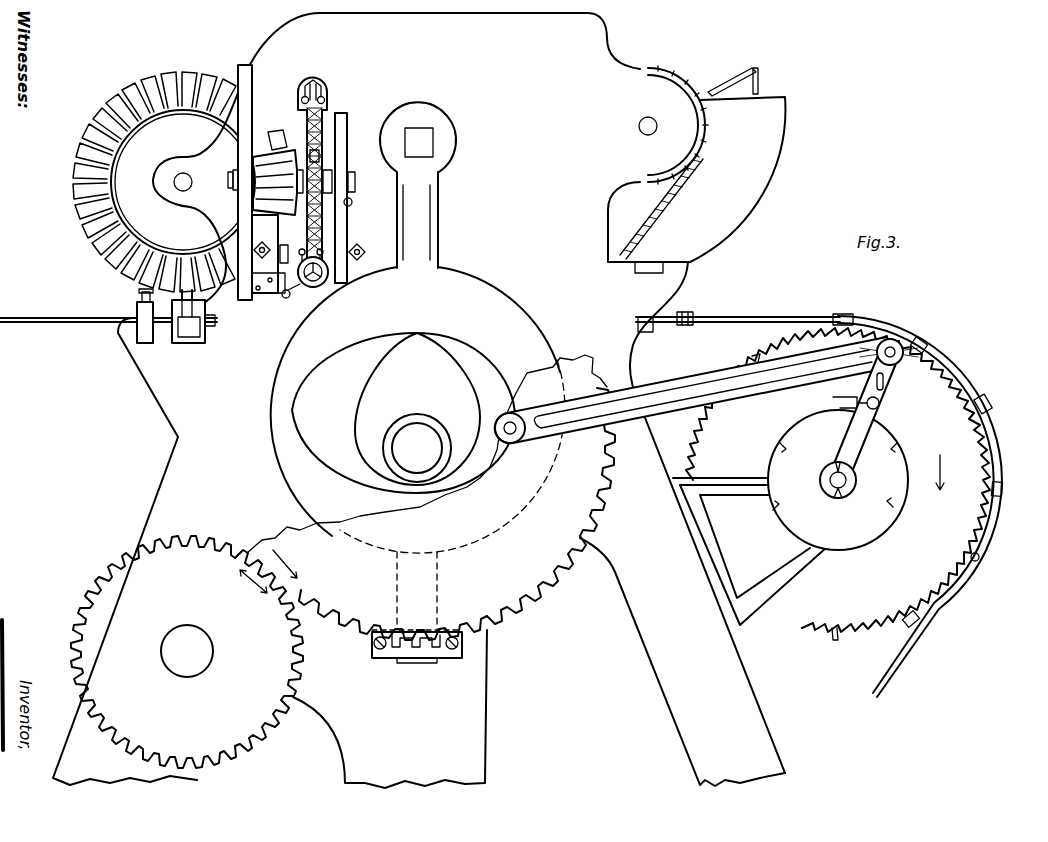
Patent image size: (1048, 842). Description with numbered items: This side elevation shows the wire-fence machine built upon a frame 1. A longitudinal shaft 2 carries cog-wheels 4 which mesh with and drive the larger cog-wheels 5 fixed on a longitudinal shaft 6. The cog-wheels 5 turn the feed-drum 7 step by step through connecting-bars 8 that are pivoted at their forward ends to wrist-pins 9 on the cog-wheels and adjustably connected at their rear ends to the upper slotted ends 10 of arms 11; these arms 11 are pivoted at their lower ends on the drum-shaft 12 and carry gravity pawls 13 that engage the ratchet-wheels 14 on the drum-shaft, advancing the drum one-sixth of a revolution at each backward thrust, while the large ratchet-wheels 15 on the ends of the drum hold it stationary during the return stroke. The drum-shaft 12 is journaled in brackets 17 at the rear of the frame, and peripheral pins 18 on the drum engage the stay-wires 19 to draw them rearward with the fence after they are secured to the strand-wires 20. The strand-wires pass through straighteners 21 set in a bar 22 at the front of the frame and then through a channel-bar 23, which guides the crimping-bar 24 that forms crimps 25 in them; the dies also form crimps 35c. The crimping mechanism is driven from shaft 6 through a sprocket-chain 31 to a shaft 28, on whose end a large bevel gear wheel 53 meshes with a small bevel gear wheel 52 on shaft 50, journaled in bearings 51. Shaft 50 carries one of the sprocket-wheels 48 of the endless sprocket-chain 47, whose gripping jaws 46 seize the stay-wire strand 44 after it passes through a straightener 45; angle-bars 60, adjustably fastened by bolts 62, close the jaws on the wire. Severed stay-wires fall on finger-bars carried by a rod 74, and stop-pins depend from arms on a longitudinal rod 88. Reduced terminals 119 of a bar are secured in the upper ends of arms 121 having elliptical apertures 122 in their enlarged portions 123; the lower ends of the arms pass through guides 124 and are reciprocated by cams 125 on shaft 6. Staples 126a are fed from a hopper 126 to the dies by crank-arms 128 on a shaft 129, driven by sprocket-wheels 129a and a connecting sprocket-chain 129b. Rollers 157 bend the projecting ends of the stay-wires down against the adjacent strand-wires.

The frame 1 is at (205, 468).
The longitudinal shaft 2 is at (187, 651).
The cog-wheels 4 is at (190, 700).
The larger cog-wheels 5 is at (540, 595).
The longitudinal shaft 6 is at (417, 448).
The feed-drum 7 is at (808, 628).
The connecting-bars 8 is at (693, 388).
The wrist-pins 9 is at (511, 422).
The upper slotted ends 10 is at (881, 385).
The arms 11 is at (870, 430).
The drum-shaft 12 is at (846, 479).
The gravity pawls 13 is at (840, 400).
The ratchet-wheels 14 is at (838, 480).
The large ratchet-wheels 15 is at (752, 358).
The brackets 17 is at (727, 484).
The peripheral pins 18 is at (980, 400).
The stay-wires 19 is at (688, 313).
The strand-wires 20 is at (45, 318).
The straighteners 21 is at (137, 310).
The bar 22 is at (140, 330).
The channel-bar 23 is at (190, 340).
The crimping-bar 24 is at (200, 297).
The crimps 25 is at (921, 345).
The shaft 28 is at (190, 168).
The sprocket-chain 31 is at (208, 330).
The crimps 35c is at (686, 325).
The single strand 44 is at (315, 286).
The straightener 45 is at (330, 283).
The gripping jaws 46 is at (312, 78).
The endless sprocket-chain 47 is at (322, 130).
The sprocket-wheels 48 is at (313, 157).
The shaft 50 is at (236, 182).
The bearings 51 is at (240, 112).
The small bevel gear wheel 52 is at (278, 148).
The large bevel gear wheel 53 is at (108, 112).
The angle-bars 60 is at (283, 260).
The bolts 62 is at (262, 245).
The rod 74 is at (286, 298).
The longitudinal rod 88 is at (352, 203).
The reduced terminals 119 is at (433, 147).
The arms 121 is at (440, 222).
The elliptical apertures 122 is at (403, 413).
The enlarged portions 123 is at (415, 401).
The guides 124 is at (400, 655).
The cams 125 is at (440, 386).
The hopper 126 is at (710, 185).
The staples 126a is at (760, 90).
The crank-arms 128 is at (743, 60).
The shaft 129 is at (639, 125).
The sprocket-wheels 129a is at (680, 72).
The endless sprocket-chain 129b is at (668, 215).
The rollers 157 is at (636, 320).